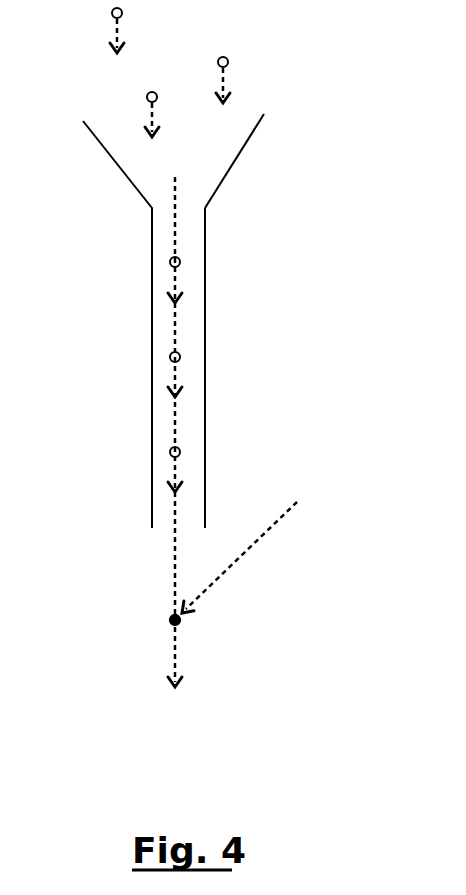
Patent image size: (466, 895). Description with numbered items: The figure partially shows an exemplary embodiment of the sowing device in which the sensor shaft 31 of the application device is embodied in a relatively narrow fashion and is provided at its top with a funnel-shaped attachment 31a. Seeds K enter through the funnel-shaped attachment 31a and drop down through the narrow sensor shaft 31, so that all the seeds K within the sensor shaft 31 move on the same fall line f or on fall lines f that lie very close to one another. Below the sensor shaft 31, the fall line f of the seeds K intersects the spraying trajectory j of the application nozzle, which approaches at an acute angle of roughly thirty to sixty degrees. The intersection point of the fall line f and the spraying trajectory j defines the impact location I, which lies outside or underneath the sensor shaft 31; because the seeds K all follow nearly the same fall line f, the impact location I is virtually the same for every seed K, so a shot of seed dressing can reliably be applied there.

The sensor shaft 31 is at (152, 230).
The funnel-shaped attachment 31a is at (235, 165).
The seeds K is at (153, 91).
The fall line f is at (175, 575).
The spraying trajectory j is at (247, 550).
The impact location I is at (170, 620).